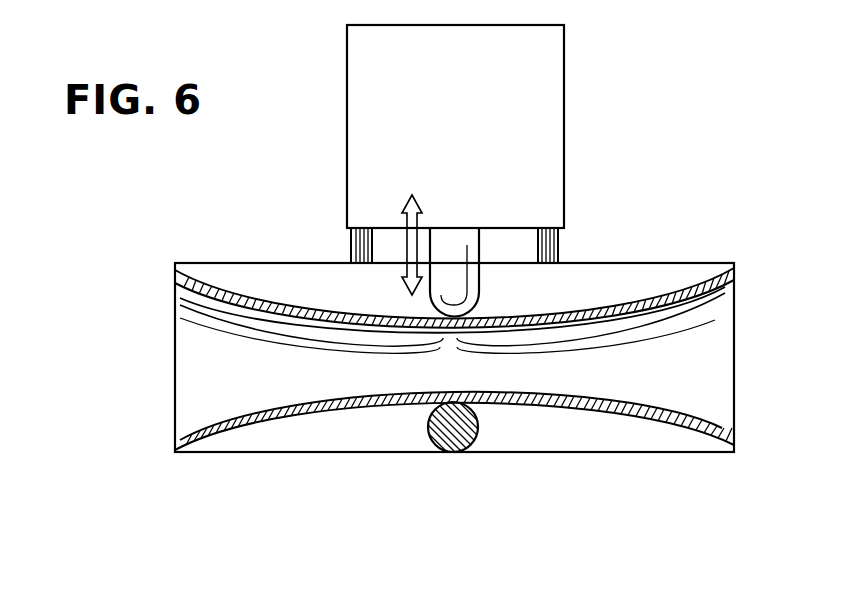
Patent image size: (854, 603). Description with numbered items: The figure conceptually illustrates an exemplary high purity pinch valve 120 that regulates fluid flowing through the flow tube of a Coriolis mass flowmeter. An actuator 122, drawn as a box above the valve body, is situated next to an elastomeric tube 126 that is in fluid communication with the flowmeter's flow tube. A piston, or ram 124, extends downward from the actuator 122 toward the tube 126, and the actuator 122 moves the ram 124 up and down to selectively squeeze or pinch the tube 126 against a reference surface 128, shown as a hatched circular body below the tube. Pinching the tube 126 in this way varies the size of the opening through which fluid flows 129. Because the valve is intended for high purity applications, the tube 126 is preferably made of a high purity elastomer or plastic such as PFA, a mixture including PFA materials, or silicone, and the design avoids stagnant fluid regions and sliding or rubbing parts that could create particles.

The pinch valve 120 is at (625, 108).
The actuator 122 is at (347, 103).
The ram 124 is at (482, 306).
The elastomeric tube 126 is at (223, 292).
The reference surface 128 is at (473, 430).
The opening through which fluid flows 129 is at (448, 362).